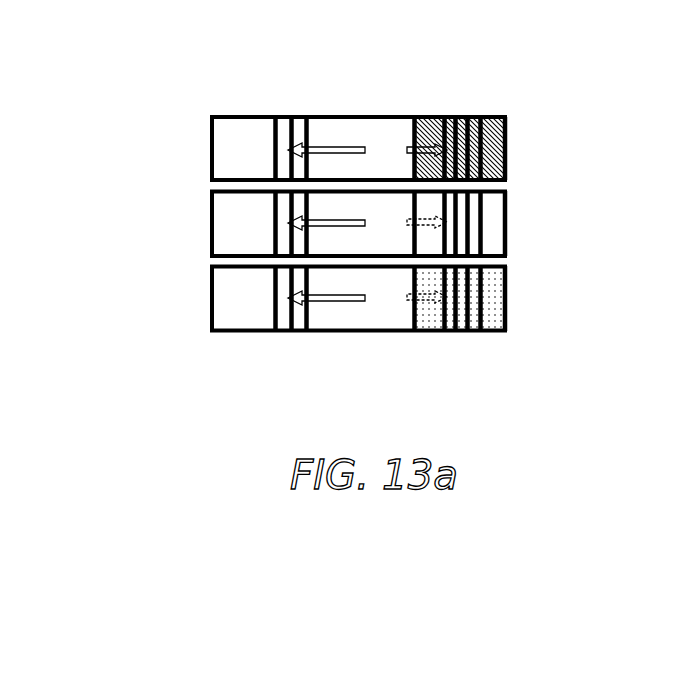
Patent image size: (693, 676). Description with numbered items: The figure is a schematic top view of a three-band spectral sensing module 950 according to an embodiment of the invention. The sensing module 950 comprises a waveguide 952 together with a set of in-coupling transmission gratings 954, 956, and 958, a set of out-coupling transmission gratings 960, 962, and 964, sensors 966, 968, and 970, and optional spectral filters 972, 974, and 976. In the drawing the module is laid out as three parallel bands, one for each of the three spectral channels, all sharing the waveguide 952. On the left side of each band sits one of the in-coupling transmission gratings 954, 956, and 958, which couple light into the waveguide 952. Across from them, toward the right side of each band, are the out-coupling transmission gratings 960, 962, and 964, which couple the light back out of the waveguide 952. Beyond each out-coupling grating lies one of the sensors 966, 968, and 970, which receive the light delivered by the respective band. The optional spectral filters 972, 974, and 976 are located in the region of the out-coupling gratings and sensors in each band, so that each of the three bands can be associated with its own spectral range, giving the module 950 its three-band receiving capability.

The three-band spectral sensing module 950 is at (459, 72).
The waveguide 952 is at (378, 123).
The in-coupling transmission grating 954 is at (288, 134).
The in-coupling transmission grating 956 is at (285, 237).
The in-coupling transmission grating 958 is at (280, 316).
The out-coupling transmission grating 960 is at (467, 133).
The out-coupling transmission grating 962 is at (472, 208).
The out-coupling transmission grating 964 is at (472, 283).
The sensor 966 is at (507, 179).
The sensor 968 is at (507, 253).
The sensor 970 is at (507, 325).
The spectral filter 972 is at (507, 155).
The spectral filter 974 is at (497, 228).
The spectral filter 976 is at (497, 298).